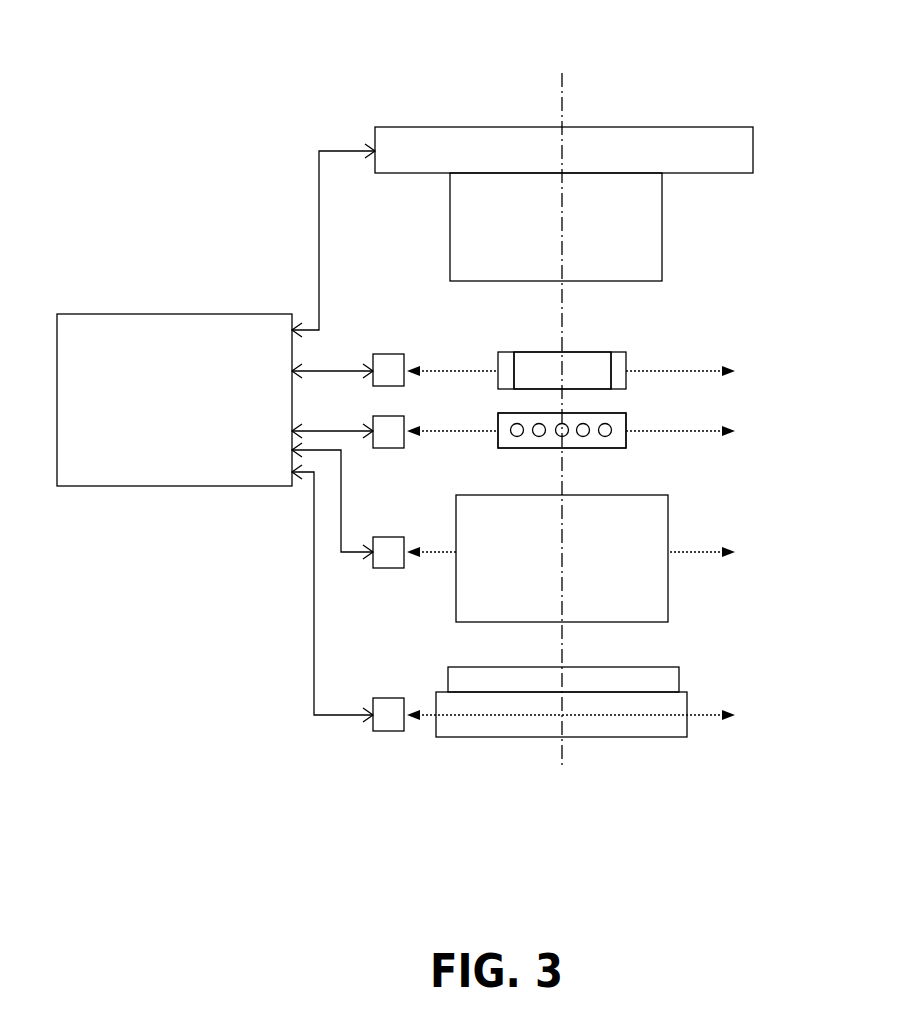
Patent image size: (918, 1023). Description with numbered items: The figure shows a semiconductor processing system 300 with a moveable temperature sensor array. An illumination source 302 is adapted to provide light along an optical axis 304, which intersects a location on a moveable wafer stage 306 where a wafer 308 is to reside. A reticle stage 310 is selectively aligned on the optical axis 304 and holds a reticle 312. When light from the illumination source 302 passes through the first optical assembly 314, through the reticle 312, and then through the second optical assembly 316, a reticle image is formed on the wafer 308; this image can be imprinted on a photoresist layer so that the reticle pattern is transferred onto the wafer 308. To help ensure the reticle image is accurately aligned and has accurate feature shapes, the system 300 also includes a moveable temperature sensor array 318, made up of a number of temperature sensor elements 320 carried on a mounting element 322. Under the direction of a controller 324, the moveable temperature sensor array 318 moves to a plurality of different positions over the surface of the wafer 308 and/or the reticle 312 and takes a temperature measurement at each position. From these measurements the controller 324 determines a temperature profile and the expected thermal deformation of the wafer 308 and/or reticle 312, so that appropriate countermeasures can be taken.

The semiconductor processing system 300 is at (580, 836).
The illumination source 302 is at (650, 133).
The optical axis 304 is at (564, 99).
The moveable wafer stage 306 is at (657, 725).
The wafer 308 is at (650, 673).
The reticle stage 310 is at (615, 363).
The reticle 312 is at (585, 375).
The first optical assembly 314 is at (647, 212).
The second optical assembly 316 is at (648, 572).
The moveable temperature sensor array 318 is at (625, 437).
The temperature sensor elements 320 is at (539, 437).
The mounting element 322 is at (507, 419).
The controller 324 is at (196, 430).